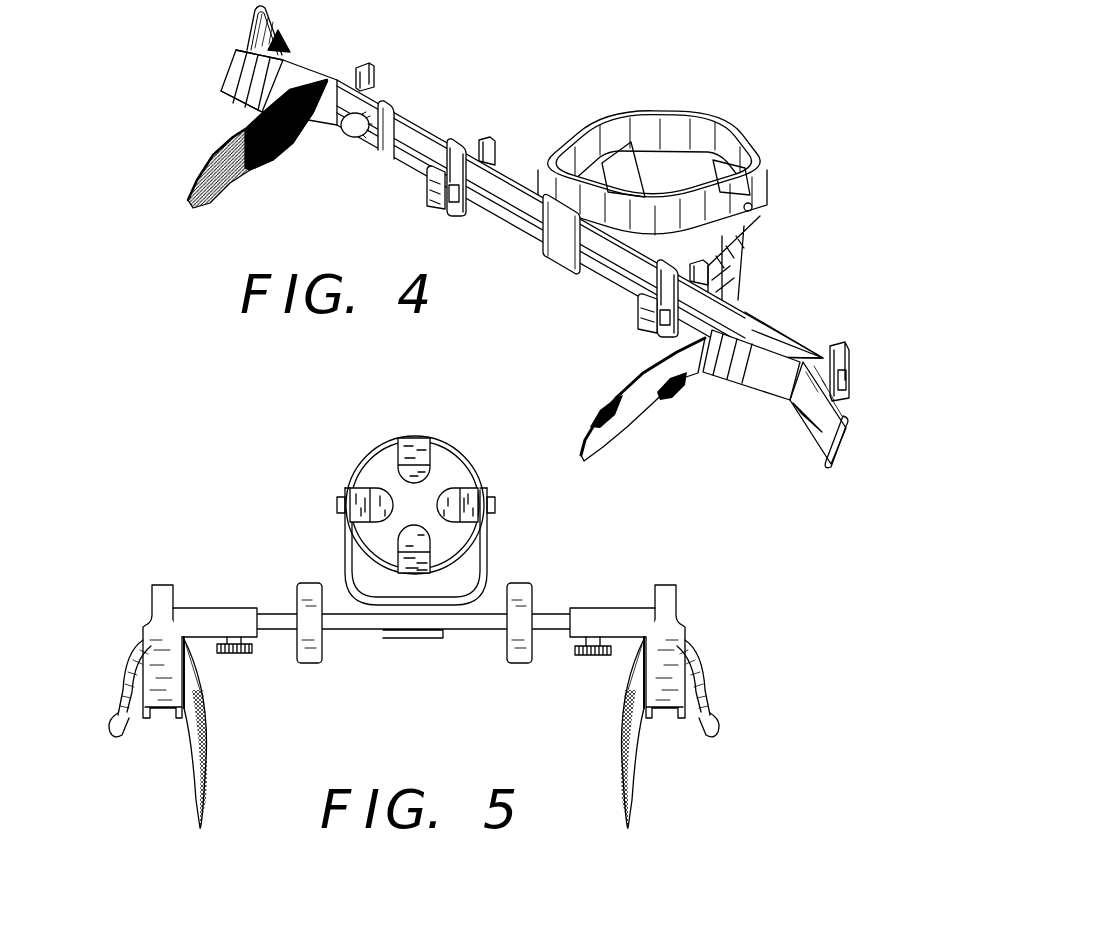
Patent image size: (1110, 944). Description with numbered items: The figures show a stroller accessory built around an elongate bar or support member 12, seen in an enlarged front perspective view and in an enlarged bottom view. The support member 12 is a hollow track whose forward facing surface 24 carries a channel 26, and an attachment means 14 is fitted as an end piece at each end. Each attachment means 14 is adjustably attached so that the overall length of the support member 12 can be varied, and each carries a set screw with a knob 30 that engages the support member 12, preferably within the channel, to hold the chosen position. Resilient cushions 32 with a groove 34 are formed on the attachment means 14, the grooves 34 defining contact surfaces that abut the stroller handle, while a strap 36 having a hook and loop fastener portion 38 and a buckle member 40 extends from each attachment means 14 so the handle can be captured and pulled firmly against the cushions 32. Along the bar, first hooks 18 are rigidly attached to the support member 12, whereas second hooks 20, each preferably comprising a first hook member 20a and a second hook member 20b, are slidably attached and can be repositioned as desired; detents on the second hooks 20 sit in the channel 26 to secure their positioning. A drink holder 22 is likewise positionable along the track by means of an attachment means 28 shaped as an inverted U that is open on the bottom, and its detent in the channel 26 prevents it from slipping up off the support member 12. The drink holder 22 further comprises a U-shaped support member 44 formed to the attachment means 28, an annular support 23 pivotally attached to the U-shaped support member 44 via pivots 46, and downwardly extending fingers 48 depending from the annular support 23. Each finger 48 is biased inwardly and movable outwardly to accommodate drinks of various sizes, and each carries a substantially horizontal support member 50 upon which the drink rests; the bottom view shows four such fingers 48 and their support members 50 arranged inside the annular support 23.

In FIG. 5, the support member 12 is at (478, 632).
In FIG. 4, the attachment means 14 is at (388, 102).
In FIG. 5, the attachment means 14 is at (225, 608).
In FIG. 4, the first hooks 18 is at (368, 67).
In FIG. 4, the second hooks 20 is at (444, 206).
In FIG. 5, the second hooks 20 is at (306, 582).
In FIG. 4, the first hook member 20a is at (428, 186).
In FIG. 4, the second hook member 20b is at (486, 139).
In FIG. 4, the drink holder 22 is at (664, 184).
In FIG. 5, the drink holder 22 is at (394, 507).
In FIG. 4, the annular support 23 is at (658, 106).
In FIG. 5, the annular support 23 is at (378, 456).
In FIG. 4, the forward facing surface 24 is at (512, 220).
In FIG. 4, the channel 26 is at (500, 182).
In FIG. 4, the attachment means 28 is at (556, 256).
In FIG. 4, the knob 30 is at (351, 135).
In FIG. 5, the knob 30 is at (238, 656).
In FIG. 4, the resilient cushions 32 is at (252, 104).
In FIG. 5, the resilient cushions 32 is at (206, 728).
In FIG. 4, the groove 34 is at (228, 74).
In FIG. 5, the groove 34 is at (160, 721).
In FIG. 4, the strap 36 is at (280, 42).
In FIG. 5, the strap 36 is at (122, 680).
In FIG. 4, the hook and loop fastener portion 38 is at (218, 196).
In FIG. 5, the hook and loop fastener portion 38 is at (206, 812).
In FIG. 4, the buckle member 40 is at (255, 17).
In FIG. 5, the buckle member 40 is at (108, 722).
In FIG. 4, the U-shaped support member 44 is at (742, 242).
In FIG. 5, the U-shaped support member 44 is at (489, 548).
In FIG. 4, the pivots 46 is at (752, 210).
In FIG. 4, the downwardly extending fingers 48 is at (638, 166).
In FIG. 5, the horizontal support member 50 is at (440, 462).